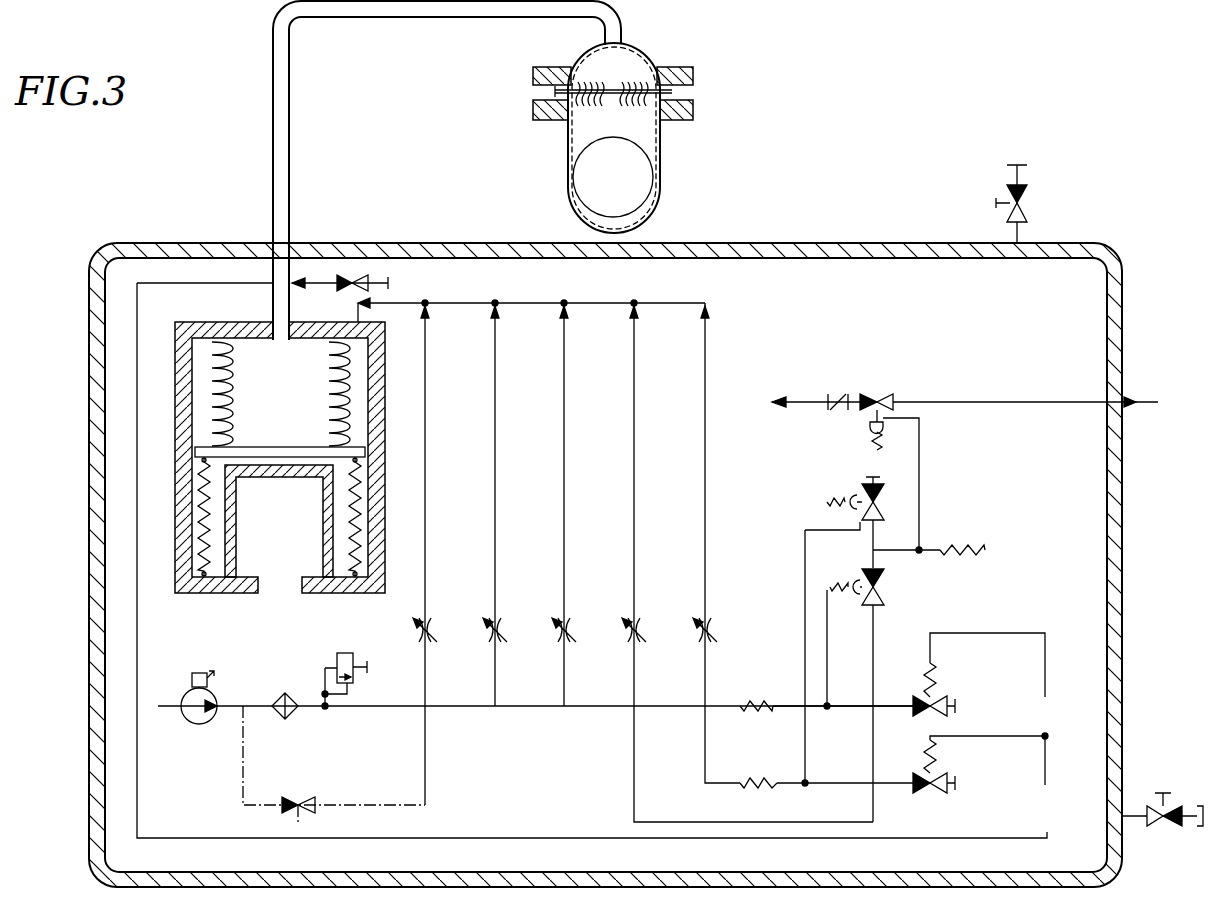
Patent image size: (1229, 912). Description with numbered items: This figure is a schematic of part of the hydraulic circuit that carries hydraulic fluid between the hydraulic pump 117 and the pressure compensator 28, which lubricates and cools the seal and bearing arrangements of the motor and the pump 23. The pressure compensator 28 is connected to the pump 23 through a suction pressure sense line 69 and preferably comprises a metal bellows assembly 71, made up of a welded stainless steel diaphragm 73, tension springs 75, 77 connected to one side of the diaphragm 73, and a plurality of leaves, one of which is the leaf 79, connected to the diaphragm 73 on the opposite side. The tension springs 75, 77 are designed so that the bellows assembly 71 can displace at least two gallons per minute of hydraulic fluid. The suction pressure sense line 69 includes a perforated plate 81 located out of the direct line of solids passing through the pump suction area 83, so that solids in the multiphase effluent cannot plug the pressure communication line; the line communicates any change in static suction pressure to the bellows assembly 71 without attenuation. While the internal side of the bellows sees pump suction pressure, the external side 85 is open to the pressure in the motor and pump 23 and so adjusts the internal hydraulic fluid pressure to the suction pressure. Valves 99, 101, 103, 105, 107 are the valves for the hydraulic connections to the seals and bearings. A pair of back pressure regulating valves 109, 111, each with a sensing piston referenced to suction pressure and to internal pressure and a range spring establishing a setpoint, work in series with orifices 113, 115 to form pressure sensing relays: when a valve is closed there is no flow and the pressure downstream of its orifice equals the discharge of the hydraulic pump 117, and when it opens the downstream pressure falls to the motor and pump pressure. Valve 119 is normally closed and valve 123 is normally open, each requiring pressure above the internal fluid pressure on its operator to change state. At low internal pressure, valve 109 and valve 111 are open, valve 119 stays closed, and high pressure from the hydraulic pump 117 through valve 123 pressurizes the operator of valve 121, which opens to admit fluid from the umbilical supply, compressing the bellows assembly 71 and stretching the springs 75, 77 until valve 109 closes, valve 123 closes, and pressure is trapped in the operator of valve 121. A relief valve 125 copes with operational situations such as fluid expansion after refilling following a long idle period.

The pump 23 is at (663, 133).
The pressure compensator 28 is at (141, 357).
The suction pressure sense line 69 is at (362, 18).
The bellows assembly 71 is at (281, 443).
The diaphragm 73 is at (366, 452).
The tension spring 75 is at (200, 513).
The tension spring 77 is at (362, 511).
The leaf 79 is at (216, 372).
The perforated plate 81 is at (640, 80).
The pump suction area 83 is at (578, 175).
The external side of bellows assembly 85 is at (405, 300).
The valve 99 is at (429, 623).
The valve 101 is at (499, 623).
The valve 103 is at (568, 623).
The valve 105 is at (638, 623).
The valve 107 is at (709, 623).
The back pressure regulating valve 109 is at (934, 702).
The back pressure regulating valve 111 is at (944, 791).
The orifice 113 is at (742, 701).
The orifice 115 is at (752, 788).
The hydraulic pump 117 is at (206, 729).
The valve 119 is at (866, 490).
The valve 121 is at (881, 393).
The valve 123 is at (885, 600).
The relief valve 125 is at (360, 275).